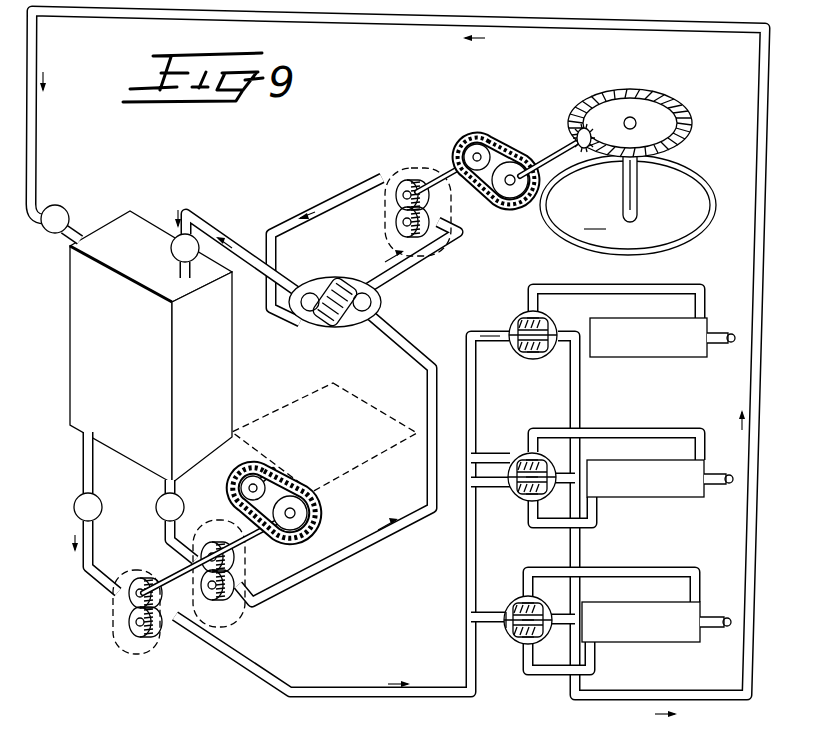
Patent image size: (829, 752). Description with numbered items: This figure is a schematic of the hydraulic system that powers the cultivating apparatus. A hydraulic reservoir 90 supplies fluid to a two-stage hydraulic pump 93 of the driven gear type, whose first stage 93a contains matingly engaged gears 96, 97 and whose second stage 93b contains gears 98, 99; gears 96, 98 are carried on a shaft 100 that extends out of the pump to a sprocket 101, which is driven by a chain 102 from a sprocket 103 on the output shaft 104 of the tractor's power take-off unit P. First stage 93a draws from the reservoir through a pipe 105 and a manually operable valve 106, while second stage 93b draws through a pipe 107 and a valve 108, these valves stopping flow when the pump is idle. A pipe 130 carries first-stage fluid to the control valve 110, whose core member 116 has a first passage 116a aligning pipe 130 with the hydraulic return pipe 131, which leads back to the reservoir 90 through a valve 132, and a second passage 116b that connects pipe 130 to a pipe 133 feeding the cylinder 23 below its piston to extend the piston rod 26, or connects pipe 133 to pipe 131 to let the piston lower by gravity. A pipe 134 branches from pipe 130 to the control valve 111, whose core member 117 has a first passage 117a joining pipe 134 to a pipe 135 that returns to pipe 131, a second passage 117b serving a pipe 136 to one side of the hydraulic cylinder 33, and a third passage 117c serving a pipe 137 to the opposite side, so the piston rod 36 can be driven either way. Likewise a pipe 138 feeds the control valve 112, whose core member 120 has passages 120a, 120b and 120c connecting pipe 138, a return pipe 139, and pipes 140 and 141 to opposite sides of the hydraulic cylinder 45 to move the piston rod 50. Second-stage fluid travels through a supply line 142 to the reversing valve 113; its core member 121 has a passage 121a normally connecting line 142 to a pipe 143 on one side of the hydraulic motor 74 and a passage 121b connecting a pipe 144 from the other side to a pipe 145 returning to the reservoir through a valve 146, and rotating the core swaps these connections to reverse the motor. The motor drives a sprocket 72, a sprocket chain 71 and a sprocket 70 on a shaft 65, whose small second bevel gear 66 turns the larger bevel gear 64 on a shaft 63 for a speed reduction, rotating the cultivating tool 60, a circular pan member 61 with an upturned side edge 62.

The cylinder 23 is at (665, 348).
The piston rod 26 is at (721, 346).
The hydraulic cylinder 33 is at (660, 490).
The piston rod 36 is at (713, 488).
The hydraulic cylinder 45 is at (656, 633).
The piston rod 50 is at (711, 634).
The cultivating tool 60 is at (633, 169).
The pan member 61 is at (639, 205).
The upturned side edge 62 is at (710, 190).
The shaft 63 is at (638, 201).
The bevel gear 64 is at (575, 108).
The shaft 65 is at (556, 160).
The second bevel gear 66 is at (576, 130).
The sprocket 70 is at (512, 205).
The sprocket chain 71 is at (489, 146).
The sprocket 72 is at (487, 163).
The hydraulic motor 74 is at (398, 166).
The hydraulic reservoir 90 is at (131, 397).
The two-stage hydraulic pump 93 is at (164, 581).
The first stage 93a is at (110, 600).
The second stage 93b is at (229, 562).
The gear 96 is at (130, 593).
The gear 97 is at (130, 632).
The gear 98 is at (228, 558).
The gear 99 is at (226, 598).
The shaft 100 is at (276, 532).
The sprocket 101 is at (311, 516).
The chain 102 is at (269, 492).
The sprocket 103 is at (243, 484).
The output shaft 104 is at (250, 470).
The power take-off unit P is at (272, 410).
The pipe 105 is at (83, 468).
The valve 106 is at (74, 507).
The pipe 107 is at (165, 489).
The valve 108 is at (156, 507).
The control valve 110 is at (506, 336).
The control valve 111 is at (506, 484).
The control valve 112 is at (510, 628).
The reversing valve 113 is at (332, 294).
The core member 116 is at (538, 336).
The first passage 116a is at (548, 320).
The second passage 116b is at (528, 314).
The core member 117 is at (515, 472).
The first passage 117a is at (536, 495).
The second passage 117b is at (522, 461).
The third passage 117c is at (535, 481).
The core member 120 is at (513, 616).
The first passage 120a is at (529, 633).
The second passage 120b is at (521, 604).
The third passage 120c is at (531, 646).
The core member 121 is at (346, 325).
The passage 121a is at (372, 301).
The passage 121b is at (303, 311).
The pipe 130 is at (356, 687).
The hydraulic return pipe 131 is at (37, 140).
The valve 132 is at (61, 205).
The pipe 133 is at (689, 290).
The pipe 134 is at (478, 458).
The pipe 135 is at (580, 458).
The pipe 136 is at (687, 428).
The pipe 137 is at (604, 526).
The pipe 138 is at (478, 612).
The pipe 139 is at (580, 602).
The pipe 140 is at (698, 566).
The pipe 141 is at (600, 673).
The supply line 142 is at (352, 548).
The pipe 143 is at (427, 258).
The pipe 144 is at (331, 200).
The pipe 145 is at (244, 240).
The valve 146 is at (170, 248).